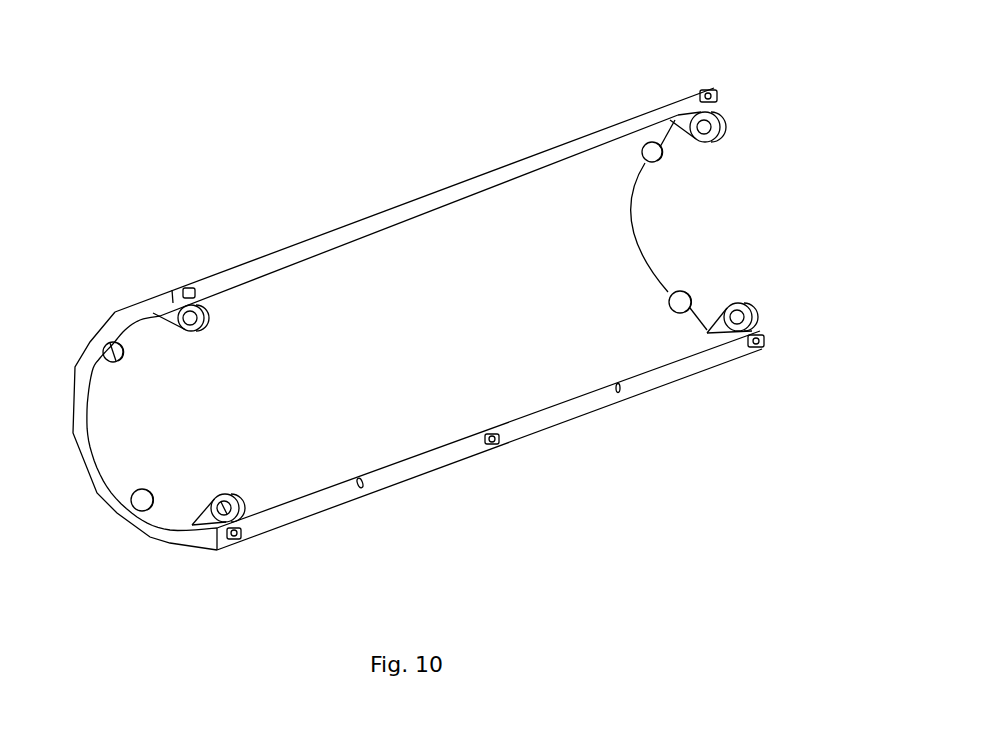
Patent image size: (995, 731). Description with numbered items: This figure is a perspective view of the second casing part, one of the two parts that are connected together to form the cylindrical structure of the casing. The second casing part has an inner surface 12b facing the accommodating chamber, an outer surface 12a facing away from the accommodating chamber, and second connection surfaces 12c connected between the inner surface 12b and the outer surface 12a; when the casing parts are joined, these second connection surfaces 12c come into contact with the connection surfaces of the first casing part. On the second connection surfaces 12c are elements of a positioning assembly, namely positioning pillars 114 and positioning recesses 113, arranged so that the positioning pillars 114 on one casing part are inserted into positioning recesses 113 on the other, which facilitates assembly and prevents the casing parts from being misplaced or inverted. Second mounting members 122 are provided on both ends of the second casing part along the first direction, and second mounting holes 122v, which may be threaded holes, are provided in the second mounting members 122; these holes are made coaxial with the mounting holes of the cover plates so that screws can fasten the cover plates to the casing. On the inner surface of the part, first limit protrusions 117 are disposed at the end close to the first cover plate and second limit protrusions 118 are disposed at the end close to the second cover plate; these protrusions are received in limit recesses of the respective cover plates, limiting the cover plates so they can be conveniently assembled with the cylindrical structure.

The outer surface 12a is at (128, 520).
The inner surface 12b is at (107, 427).
The second connection surfaces 12c is at (422, 205).
The positioning recess 113 is at (361, 486).
The positioning pillar 114 is at (713, 96).
The first limit protrusion 117 is at (112, 347).
The second limit protrusion 118 is at (657, 157).
The second mounting member 122 is at (197, 317).
The second mounting hole 122v is at (228, 507).